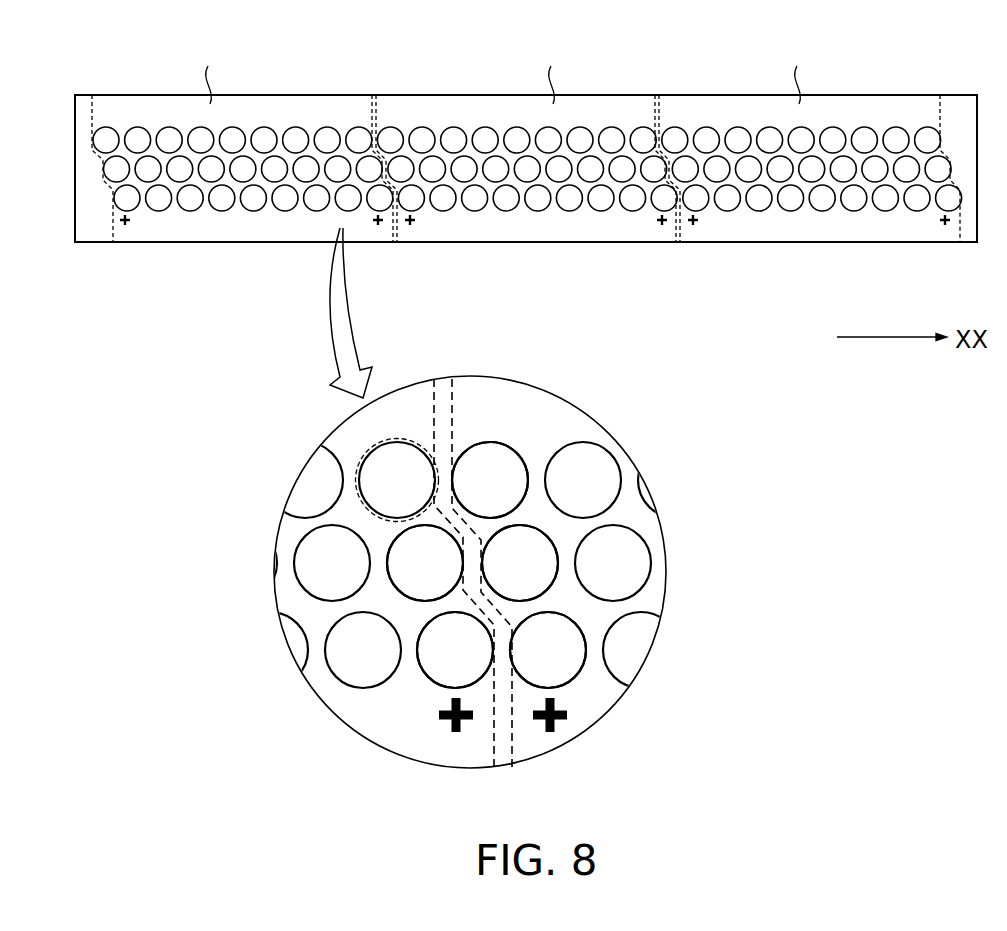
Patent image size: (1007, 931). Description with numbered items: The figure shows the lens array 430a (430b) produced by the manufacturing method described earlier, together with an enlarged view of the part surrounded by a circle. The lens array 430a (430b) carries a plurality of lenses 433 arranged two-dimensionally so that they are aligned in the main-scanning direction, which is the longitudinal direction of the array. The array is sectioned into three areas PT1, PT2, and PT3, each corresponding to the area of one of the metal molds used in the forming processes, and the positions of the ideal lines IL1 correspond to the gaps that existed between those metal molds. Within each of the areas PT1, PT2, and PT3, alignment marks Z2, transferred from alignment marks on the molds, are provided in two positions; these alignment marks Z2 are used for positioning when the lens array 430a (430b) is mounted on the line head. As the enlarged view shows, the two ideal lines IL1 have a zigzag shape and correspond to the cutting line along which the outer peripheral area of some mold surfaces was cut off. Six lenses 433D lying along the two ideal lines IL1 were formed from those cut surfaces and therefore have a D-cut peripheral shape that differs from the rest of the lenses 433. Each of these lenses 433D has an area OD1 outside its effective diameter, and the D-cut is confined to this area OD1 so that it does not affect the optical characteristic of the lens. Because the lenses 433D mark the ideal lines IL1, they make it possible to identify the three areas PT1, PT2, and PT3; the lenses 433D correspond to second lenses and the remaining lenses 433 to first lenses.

The lens array 430a is at (538, 126).
The lens array 430b is at (526, 168).
The lenses 433 is at (188, 200).
The lenses with D-cut shape 433D is at (455, 648).
The area outside effective range OD1 is at (355, 483).
The ideal lines IL1 is at (379, 95).
The alignment marks Z2 is at (410, 228).
The first area PT1 is at (209, 71).
The second area PT2 is at (550, 71).
The third area PT3 is at (797, 71).